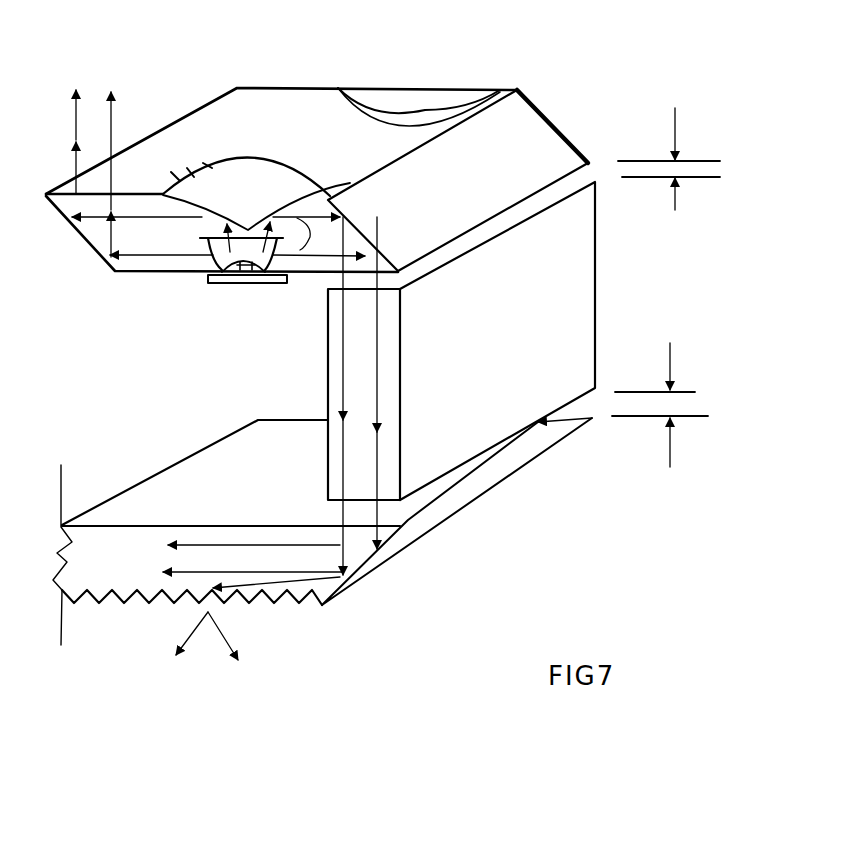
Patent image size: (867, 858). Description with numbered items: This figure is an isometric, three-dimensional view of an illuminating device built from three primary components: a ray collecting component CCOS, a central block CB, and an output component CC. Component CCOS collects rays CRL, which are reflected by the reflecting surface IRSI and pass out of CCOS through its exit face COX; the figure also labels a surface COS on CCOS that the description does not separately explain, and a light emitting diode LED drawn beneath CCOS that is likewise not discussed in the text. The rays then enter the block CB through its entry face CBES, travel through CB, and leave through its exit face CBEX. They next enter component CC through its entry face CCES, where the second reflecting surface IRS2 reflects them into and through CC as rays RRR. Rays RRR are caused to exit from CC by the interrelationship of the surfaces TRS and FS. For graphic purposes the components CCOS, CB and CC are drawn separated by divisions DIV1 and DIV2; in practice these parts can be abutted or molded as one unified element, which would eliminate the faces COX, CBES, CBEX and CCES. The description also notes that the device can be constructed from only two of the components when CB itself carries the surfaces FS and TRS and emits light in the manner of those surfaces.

The collected rays CRL is at (310, 278).
The ray collecting primary component CCOS is at (435, 88).
The reflecting surface IRSI is at (508, 145).
The collimator output surface COS is at (584, 132).
The first division DIV1 is at (669, 171).
The central block component CB is at (567, 287).
The entry face of CB CBES is at (438, 263).
The second division DIV2 is at (660, 417).
The exit face of CB CBEX is at (483, 448).
The output primary component CC is at (462, 478).
The entry face of CC CCES is at (400, 512).
The second reflecting surface IRS2 is at (370, 575).
The reflected rays RRR is at (283, 543).
The emitting surface FS is at (138, 592).
The emitting surface TRS is at (125, 532).
The light emitting diode LED is at (240, 275).
The exit face of CCOS COX is at (370, 272).